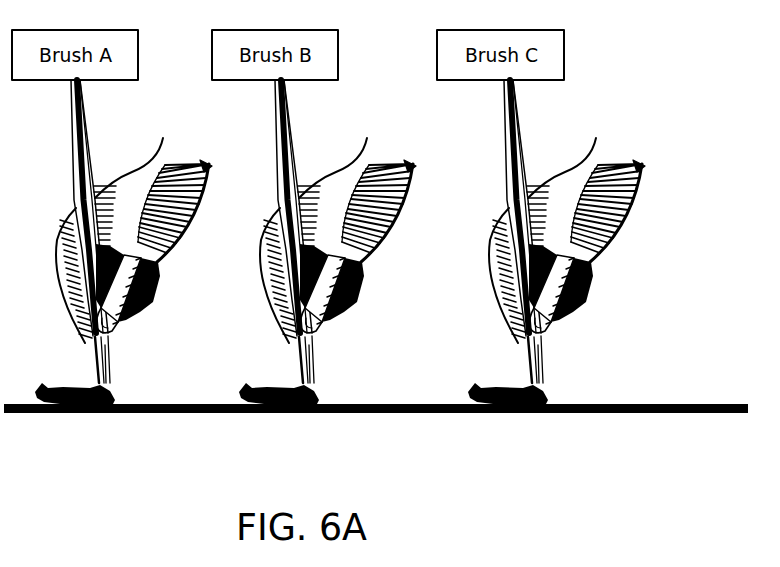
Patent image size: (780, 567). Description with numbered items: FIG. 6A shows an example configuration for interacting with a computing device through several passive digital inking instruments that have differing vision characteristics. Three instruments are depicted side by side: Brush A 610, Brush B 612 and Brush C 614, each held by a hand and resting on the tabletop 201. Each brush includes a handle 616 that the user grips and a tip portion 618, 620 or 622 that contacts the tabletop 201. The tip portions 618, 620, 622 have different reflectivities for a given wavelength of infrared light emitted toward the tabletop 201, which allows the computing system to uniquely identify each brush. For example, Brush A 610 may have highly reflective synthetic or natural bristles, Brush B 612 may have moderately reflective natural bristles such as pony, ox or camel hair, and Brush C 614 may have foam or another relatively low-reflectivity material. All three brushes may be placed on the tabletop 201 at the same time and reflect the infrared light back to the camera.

The Brush A 610 is at (119, 140).
The Brush B 612 is at (323, 140).
The Brush C 614 is at (570, 120).
The handle 616 is at (110, 363).
The tip portion 618 is at (78, 407).
The tip portion 620 is at (287, 407).
The tip portion 622 is at (492, 407).
The tabletop 201 is at (673, 408).